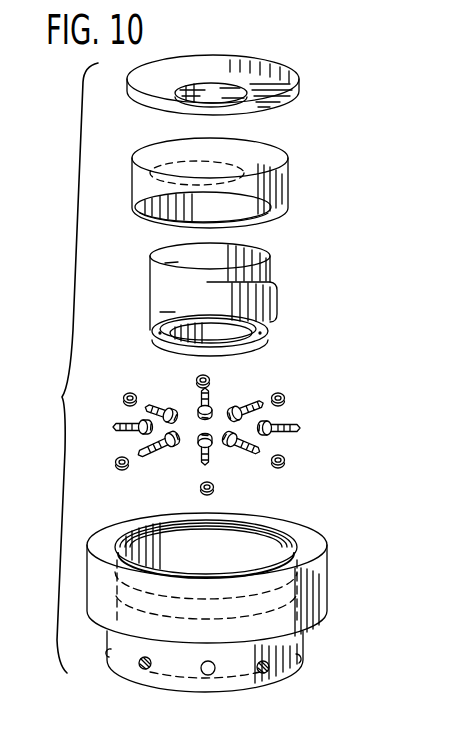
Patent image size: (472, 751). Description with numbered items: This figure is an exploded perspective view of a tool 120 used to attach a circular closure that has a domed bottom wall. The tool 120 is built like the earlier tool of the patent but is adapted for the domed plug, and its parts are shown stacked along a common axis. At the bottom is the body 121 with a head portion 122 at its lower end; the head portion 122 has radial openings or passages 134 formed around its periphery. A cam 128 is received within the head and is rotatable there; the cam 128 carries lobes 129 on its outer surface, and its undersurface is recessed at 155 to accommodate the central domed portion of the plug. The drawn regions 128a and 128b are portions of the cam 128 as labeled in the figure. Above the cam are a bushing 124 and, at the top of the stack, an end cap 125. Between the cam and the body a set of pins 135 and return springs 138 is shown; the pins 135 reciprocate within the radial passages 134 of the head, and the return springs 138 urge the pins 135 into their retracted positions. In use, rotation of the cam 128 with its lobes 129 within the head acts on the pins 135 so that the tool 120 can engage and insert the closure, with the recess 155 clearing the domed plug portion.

The tool 120 is at (272, 53).
The end cap 125 is at (300, 85).
The bushing 124 is at (288, 181).
The cam 128 is at (270, 267).
The cup lower portion 128a is at (160, 314).
The cup upper portion 128b is at (165, 263).
The lobes 129 is at (274, 304).
The recess 155 is at (230, 337).
The pins 135 is at (213, 457).
The return springs 138 is at (287, 397).
The body 121 is at (310, 538).
The head portion 122 is at (286, 674).
The radial openings or passages 134 is at (202, 675).